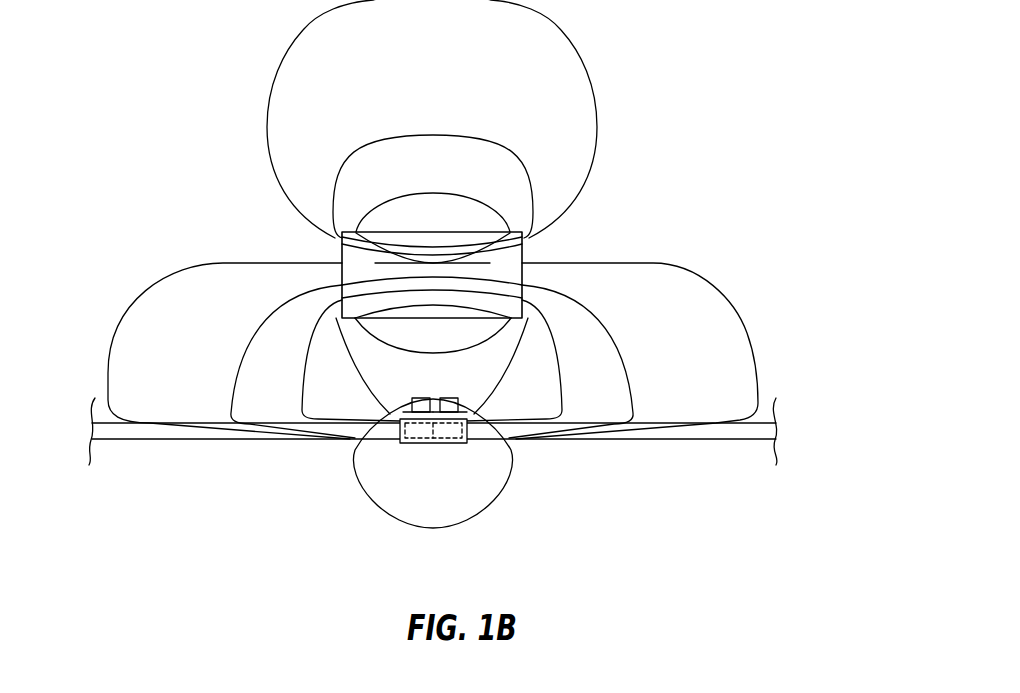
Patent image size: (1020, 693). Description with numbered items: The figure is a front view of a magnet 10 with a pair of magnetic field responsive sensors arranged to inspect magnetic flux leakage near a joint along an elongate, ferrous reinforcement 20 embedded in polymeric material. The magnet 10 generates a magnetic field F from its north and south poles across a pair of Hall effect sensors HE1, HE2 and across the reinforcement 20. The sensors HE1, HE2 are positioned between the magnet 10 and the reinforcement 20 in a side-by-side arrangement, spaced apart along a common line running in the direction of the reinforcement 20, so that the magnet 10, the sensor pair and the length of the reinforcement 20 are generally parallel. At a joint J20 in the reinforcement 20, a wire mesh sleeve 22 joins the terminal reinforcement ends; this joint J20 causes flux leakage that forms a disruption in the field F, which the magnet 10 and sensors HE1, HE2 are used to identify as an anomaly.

The magnet 10 is at (342, 250).
The magnetic field F is at (675, 250).
The ferrous reinforcement 20 is at (747, 441).
The wire mesh sleeve 22 is at (405, 443).
The Hall effect sensor HE1 is at (335, 441).
The Hall effect sensor HE2 is at (532, 441).
The joint in reinforcement J20 is at (435, 464).